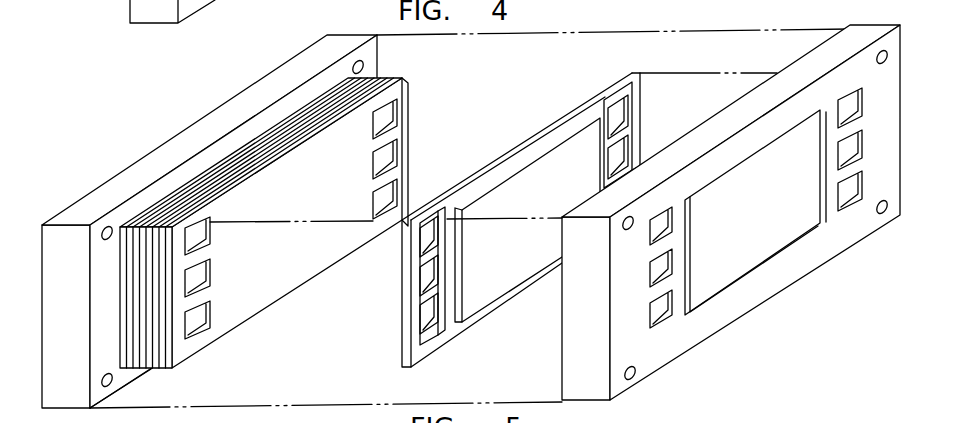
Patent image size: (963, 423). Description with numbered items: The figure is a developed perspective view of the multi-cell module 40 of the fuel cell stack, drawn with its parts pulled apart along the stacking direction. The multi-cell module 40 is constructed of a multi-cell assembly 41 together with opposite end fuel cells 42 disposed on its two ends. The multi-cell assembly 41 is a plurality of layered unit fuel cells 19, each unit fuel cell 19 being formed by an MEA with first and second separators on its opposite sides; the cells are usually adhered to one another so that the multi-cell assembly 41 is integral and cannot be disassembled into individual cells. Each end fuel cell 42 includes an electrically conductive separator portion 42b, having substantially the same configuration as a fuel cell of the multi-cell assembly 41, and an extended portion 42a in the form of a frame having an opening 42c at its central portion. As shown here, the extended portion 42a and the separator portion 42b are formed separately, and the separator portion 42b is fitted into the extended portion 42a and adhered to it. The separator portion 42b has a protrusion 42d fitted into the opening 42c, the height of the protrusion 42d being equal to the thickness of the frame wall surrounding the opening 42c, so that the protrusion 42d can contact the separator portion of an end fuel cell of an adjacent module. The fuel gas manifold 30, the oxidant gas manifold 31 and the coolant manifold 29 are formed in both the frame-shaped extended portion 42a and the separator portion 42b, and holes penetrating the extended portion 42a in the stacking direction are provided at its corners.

The unit fuel cell 19 is at (172, 328).
The coolant manifold 29 is at (660, 277).
The fuel gas manifold 30 is at (660, 318).
The oxidant gas manifold 31 is at (662, 233).
The multi-cell module 40 is at (248, 325).
The multi-cell assembly 41 is at (390, 76).
The end fuel cell 42 is at (98, 189).
The extended portion 42a is at (731, 216).
The separator portion 42b is at (521, 219).
The opening 42c is at (777, 259).
The protrusion 42d is at (518, 296).